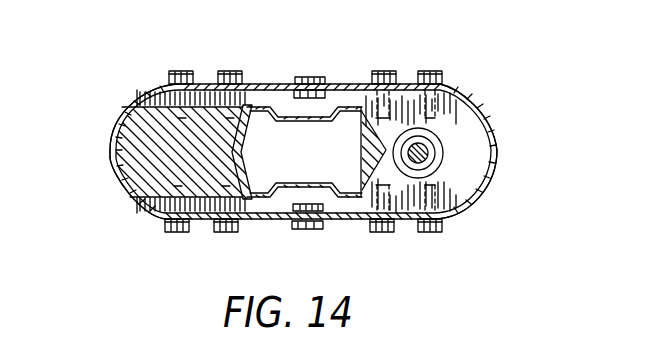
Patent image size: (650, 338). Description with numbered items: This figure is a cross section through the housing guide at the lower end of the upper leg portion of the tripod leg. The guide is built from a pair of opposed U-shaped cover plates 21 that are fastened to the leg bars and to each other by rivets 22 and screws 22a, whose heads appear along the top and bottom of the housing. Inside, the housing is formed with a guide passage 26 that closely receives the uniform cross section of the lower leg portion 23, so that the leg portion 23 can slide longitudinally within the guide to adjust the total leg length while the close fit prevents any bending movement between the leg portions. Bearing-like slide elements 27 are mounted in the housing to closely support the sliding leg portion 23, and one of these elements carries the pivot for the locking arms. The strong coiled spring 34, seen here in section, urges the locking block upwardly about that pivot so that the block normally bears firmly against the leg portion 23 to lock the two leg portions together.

The U-shaped cover plates 21 is at (132, 197).
The rivets 22 is at (310, 77).
The screws 22a is at (221, 70).
The leg portion 23 is at (334, 96).
The guide passage 26 is at (255, 220).
The bearing-like slide elements 27 is at (115, 147).
The coiled spring 34 is at (445, 167).